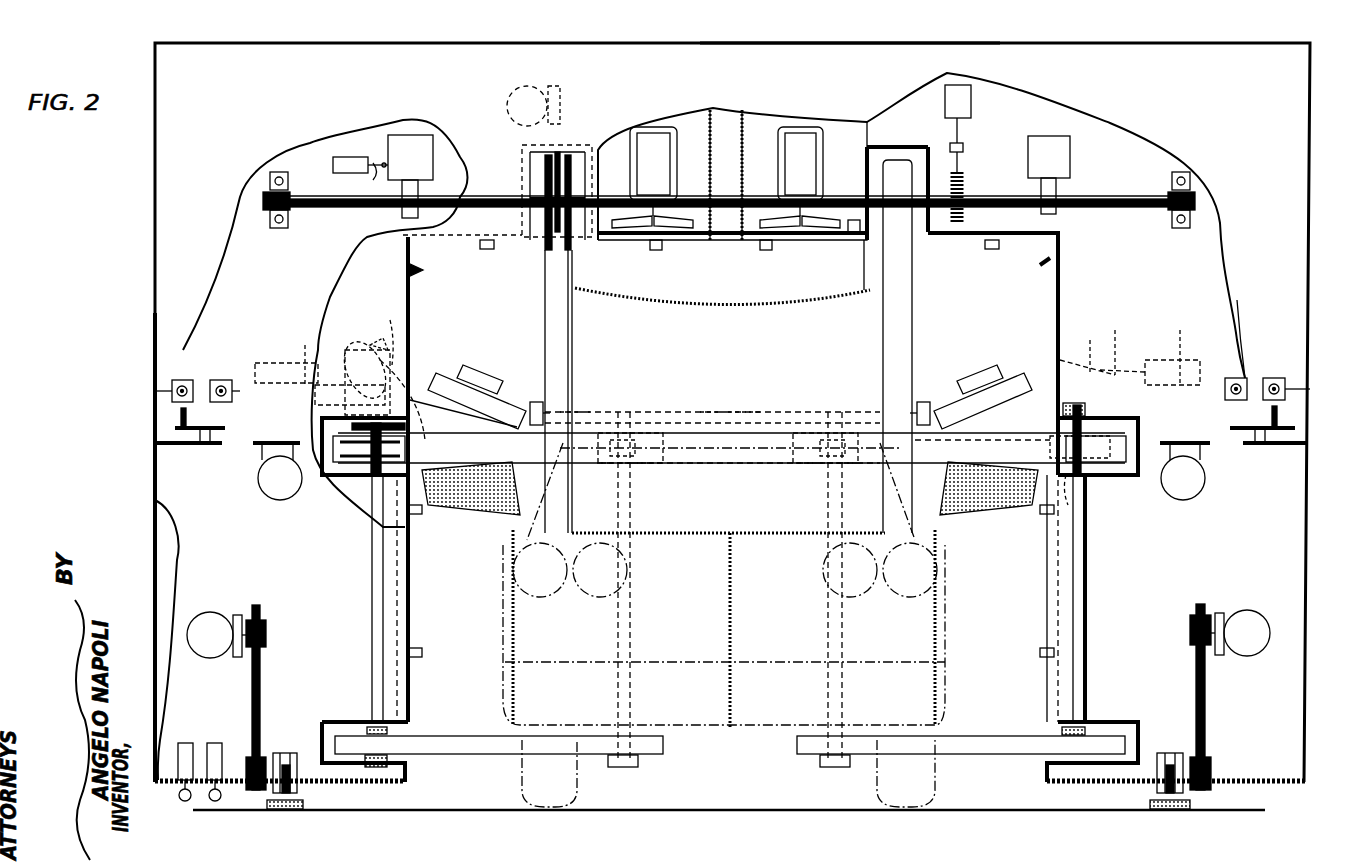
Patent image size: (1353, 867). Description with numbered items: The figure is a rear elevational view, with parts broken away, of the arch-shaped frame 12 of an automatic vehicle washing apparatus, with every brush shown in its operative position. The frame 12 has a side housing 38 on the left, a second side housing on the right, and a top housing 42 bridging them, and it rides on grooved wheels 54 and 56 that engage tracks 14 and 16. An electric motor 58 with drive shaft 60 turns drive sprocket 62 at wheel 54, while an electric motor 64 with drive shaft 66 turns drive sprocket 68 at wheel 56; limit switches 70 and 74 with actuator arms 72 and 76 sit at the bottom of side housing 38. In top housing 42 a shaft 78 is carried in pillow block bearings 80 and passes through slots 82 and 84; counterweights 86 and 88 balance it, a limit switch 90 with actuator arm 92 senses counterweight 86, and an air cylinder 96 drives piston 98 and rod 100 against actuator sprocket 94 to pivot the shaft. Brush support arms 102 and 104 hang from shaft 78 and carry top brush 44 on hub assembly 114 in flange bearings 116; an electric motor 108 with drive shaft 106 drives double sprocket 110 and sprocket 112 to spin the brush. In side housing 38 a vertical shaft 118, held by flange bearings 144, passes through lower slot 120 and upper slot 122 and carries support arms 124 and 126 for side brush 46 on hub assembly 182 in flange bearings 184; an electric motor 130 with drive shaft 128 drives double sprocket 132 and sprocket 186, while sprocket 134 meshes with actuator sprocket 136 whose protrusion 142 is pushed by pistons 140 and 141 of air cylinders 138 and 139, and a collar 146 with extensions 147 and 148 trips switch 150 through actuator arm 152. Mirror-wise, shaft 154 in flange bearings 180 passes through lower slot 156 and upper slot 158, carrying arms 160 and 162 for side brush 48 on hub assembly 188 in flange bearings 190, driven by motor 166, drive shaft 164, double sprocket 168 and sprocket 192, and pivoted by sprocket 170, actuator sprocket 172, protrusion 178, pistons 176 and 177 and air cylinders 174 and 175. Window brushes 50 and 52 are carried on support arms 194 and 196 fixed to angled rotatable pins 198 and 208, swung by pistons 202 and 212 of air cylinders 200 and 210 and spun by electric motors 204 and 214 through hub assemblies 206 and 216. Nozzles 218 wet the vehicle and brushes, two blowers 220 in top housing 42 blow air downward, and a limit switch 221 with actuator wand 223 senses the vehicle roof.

The frame 12 is at (1313, 160).
The track 14 is at (284, 808).
The track 16 is at (1165, 808).
The side housing 38 is at (155, 297).
The top housing 42 is at (848, 43).
The top brush 44 is at (728, 343).
The side brush 46 is at (682, 600).
The side brush 48 is at (784, 600).
The window brush 50 is at (471, 488).
The window brush 52 is at (989, 488).
The grooved wheel 54 is at (300, 790).
The grooved wheel 56 is at (1168, 753).
The electric motor 58 is at (214, 635).
The drive shaft 60 is at (258, 612).
The drive sprocket 62 is at (262, 755).
The electric motor 64 is at (1242, 633).
The drive shaft 66 is at (1196, 618).
The drive sprocket 68 is at (1208, 770).
The electrical limit switch 70 is at (187, 743).
The actuator arm 72 is at (181, 801).
The electrical limit switch 74 is at (216, 743).
The actuator arm 76 is at (213, 802).
The shaft 78 is at (1098, 197).
The pillow block bearing 80 is at (280, 228).
The slot 82 is at (530, 243).
The slot 84 is at (915, 240).
The counterweight 86 is at (410, 176).
The counterweight 88 is at (1049, 175).
The electrical limit switch 90 is at (333, 165).
The actuator arm 92 is at (373, 178).
The actuator sprocket 94 is at (966, 188).
The air cylinder 96 is at (971, 103).
The piston 98 is at (963, 135).
The rod 100 is at (961, 162).
The brush support arm 102 is at (568, 326).
The brush support arm 104 is at (912, 293).
The drive shaft 106 is at (562, 96).
The electric motor 108 is at (507, 104).
The double sprocket 110 is at (557, 152).
The sprocket 112 is at (575, 405).
The hub assembly 114 is at (732, 412).
The flange bearing 116 is at (532, 402).
The shaft 118 is at (372, 556).
The lower slot 120 is at (405, 757).
The upper slot 122 is at (352, 497).
The side brush support arm 124 is at (432, 745).
The side brush support arm 126 is at (731, 447).
The drive shaft 128 is at (258, 448).
The electric motor 130 is at (280, 478).
The double sprocket 132 is at (405, 447).
The sprocket 134 is at (405, 426).
The actuator sprocket 136 is at (225, 428).
The air cylinder 138 is at (182, 380).
The air cylinder 139 is at (221, 380).
The piston 140 is at (170, 393).
The piston 141 is at (233, 394).
The protrusion 142 is at (180, 418).
The flange bearing 144 is at (387, 767).
The collar 146 is at (383, 324).
The extension 147 is at (373, 326).
The extension 148 is at (500, 366).
The electrical switch 150 is at (345, 418).
The actuator arm 152 is at (350, 401).
The shaft 154 is at (1085, 565).
The lower slot 156 is at (1050, 757).
The upper slot 158 is at (1080, 495).
The side brush support arm 160 is at (978, 745).
The side brush support arm 162 is at (982, 442).
The drive shaft 164 is at (1205, 448).
The electric motor 166 is at (1183, 478).
The double sprocket 168 is at (1050, 446).
The sprocket 170 is at (1138, 425).
The actuator sprocket 172 is at (1285, 389).
The air cylinder 174 is at (1245, 375).
The air cylinder 175 is at (1285, 384).
The piston 176 is at (1232, 378).
The piston 177 is at (1295, 428).
The protrusion 178 is at (1270, 408).
The flange bearing 180 is at (1088, 408).
The hub assembly 182 is at (632, 636).
The flange bearing 184 is at (625, 412).
The sprocket 186 is at (652, 450).
The hub assembly 188 is at (845, 636).
The flange bearing 190 is at (828, 412).
The sprocket 192 is at (792, 458).
The brush support arm 194 is at (413, 398).
The brush support arm 196 is at (1077, 341).
The rotatable pin 198 is at (359, 364).
The air cylinder 200 is at (295, 363).
The piston 202 is at (305, 343).
The electric motor 204 is at (455, 375).
The hub assembly 206 is at (415, 400).
The rotatable pin 208 is at (1119, 341).
The air cylinder 210 is at (1182, 346).
The piston 212 is at (1130, 357).
The electric motor 214 is at (1005, 372).
The hub assembly 216 is at (965, 380).
The nozzle 218 is at (494, 249).
The blower 220 is at (732, 175).
The electrical limit switch 221 is at (853, 220).
The actuator wand 223 is at (860, 272).